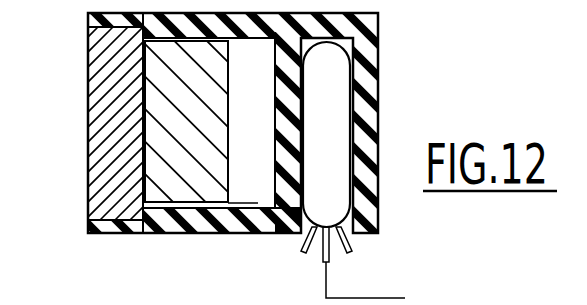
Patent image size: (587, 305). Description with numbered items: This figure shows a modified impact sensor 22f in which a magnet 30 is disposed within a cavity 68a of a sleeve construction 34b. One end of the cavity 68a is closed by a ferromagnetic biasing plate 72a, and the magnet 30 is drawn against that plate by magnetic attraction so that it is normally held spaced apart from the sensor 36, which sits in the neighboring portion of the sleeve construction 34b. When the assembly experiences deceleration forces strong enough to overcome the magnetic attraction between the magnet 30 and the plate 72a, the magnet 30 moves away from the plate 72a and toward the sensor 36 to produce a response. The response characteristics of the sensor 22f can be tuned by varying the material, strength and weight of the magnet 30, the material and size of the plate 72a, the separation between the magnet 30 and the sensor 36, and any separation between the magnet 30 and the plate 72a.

The sensor 22f is at (387, 46).
The magnet 30 is at (152, 103).
The sensor 36 is at (337, 125).
The ferromagnetic biasing plate 72a is at (97, 148).
The sleeve construction 34b is at (175, 232).
The cavity 68a is at (258, 203).